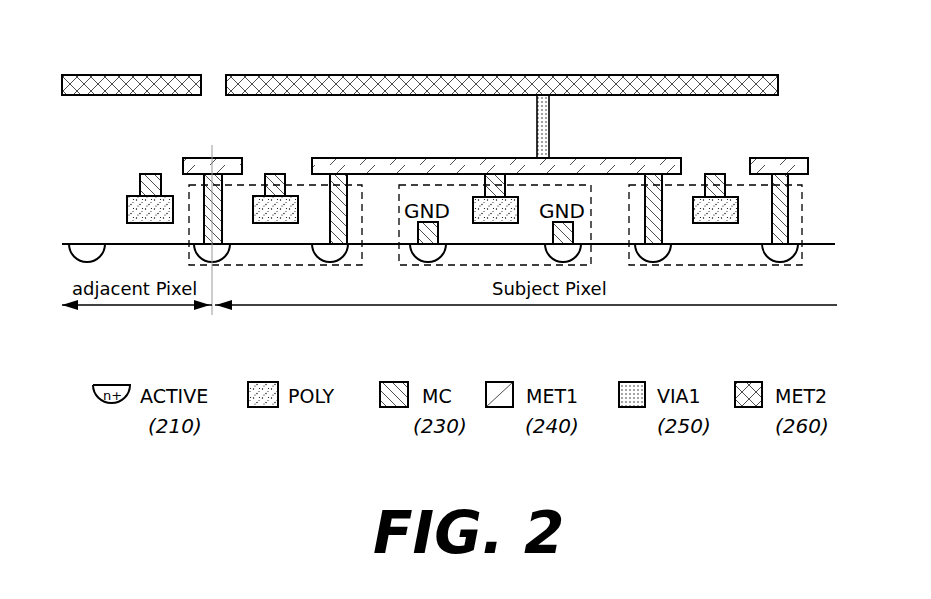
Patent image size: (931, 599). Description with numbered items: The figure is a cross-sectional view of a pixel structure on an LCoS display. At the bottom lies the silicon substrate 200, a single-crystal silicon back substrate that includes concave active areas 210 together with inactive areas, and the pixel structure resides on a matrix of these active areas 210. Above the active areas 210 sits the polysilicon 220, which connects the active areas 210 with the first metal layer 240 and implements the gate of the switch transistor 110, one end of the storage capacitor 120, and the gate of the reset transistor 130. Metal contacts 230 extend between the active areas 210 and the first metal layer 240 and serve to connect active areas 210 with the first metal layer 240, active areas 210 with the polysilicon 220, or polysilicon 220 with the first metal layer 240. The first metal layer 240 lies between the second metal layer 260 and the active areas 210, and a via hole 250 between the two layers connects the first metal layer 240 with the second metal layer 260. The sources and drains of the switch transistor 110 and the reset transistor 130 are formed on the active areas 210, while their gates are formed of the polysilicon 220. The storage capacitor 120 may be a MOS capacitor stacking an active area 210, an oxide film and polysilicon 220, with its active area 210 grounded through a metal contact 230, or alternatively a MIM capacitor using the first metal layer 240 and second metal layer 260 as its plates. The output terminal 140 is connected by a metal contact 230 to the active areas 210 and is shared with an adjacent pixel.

The switch transistor 110 is at (257, 184).
The storage capacitor 120 is at (450, 185).
The reset transistor 130 is at (698, 184).
The output terminal 140 is at (201, 159).
The silicon substrate 200 is at (822, 244).
The active areas 210 is at (226, 258).
The polysilicon 220 is at (435, 279).
The metal contacts 230 is at (336, 185).
The first metal layer 240 is at (665, 159).
The via hole 250 is at (551, 131).
The second metal layer 260 is at (609, 79).